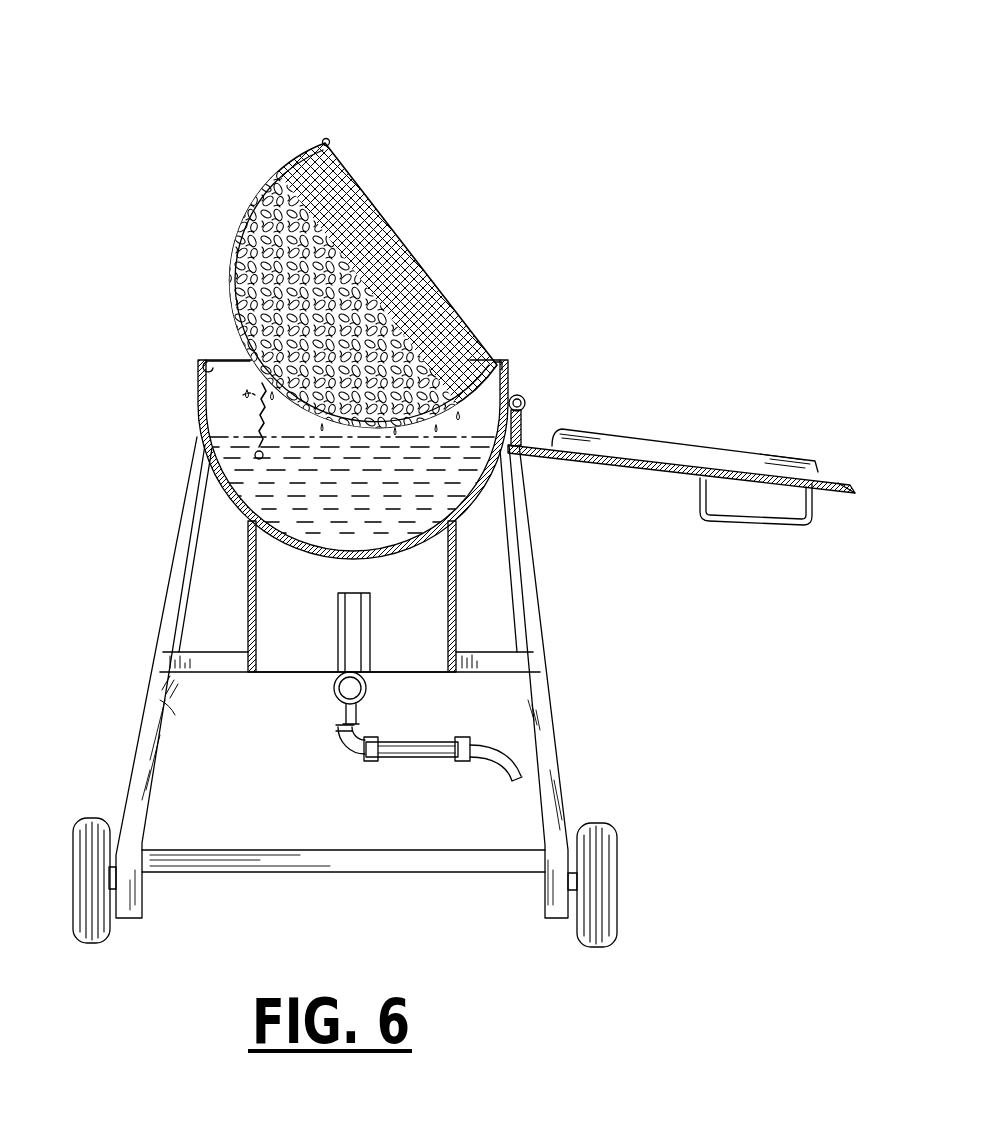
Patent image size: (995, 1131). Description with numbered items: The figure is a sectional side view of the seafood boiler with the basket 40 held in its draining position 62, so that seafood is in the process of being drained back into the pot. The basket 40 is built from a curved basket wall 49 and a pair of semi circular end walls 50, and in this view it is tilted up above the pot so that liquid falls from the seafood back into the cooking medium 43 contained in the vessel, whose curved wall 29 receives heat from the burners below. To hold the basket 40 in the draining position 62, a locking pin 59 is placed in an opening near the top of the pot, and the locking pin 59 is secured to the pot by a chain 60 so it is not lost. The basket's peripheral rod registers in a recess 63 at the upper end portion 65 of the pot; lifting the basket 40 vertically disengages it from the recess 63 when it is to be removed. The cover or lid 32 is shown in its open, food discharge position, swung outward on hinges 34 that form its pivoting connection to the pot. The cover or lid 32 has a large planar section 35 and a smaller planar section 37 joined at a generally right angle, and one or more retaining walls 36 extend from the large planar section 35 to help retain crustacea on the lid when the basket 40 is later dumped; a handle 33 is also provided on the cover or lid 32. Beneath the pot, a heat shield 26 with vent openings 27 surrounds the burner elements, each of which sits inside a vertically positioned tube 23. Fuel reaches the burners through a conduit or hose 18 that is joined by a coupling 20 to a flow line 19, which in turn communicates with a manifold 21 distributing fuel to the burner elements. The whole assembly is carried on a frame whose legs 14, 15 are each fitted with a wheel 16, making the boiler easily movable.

The draining position 62 is at (318, 90).
The semi circular end wall 50 is at (313, 150).
The curved basket wall 49 is at (228, 222).
The basket 40 is at (335, 297).
The upper end portion 65 is at (213, 352).
The locking pin 59 is at (257, 366).
The recess 63 is at (203, 358).
The chain 60 is at (243, 395).
The hinge 34 is at (524, 400).
The smaller planar section 37 is at (523, 432).
The retaining wall 36 is at (630, 437).
The large planar section 35 is at (627, 475).
The handle 33 is at (755, 512).
The cover or lid 32 is at (826, 502).
The vent opening 27 is at (233, 527).
The curved wall 29 is at (478, 520).
The cooking medium 43 is at (392, 540).
The heat shield 26 is at (250, 583).
The tube 23 is at (338, 618).
The manifold 21 is at (338, 695).
The flow line 19 is at (425, 745).
The coupling 20 is at (465, 740).
The conduit or hose 18 is at (497, 762).
The leg 14 is at (160, 683).
The leg 15 is at (550, 685).
The wheel 16 is at (100, 943).